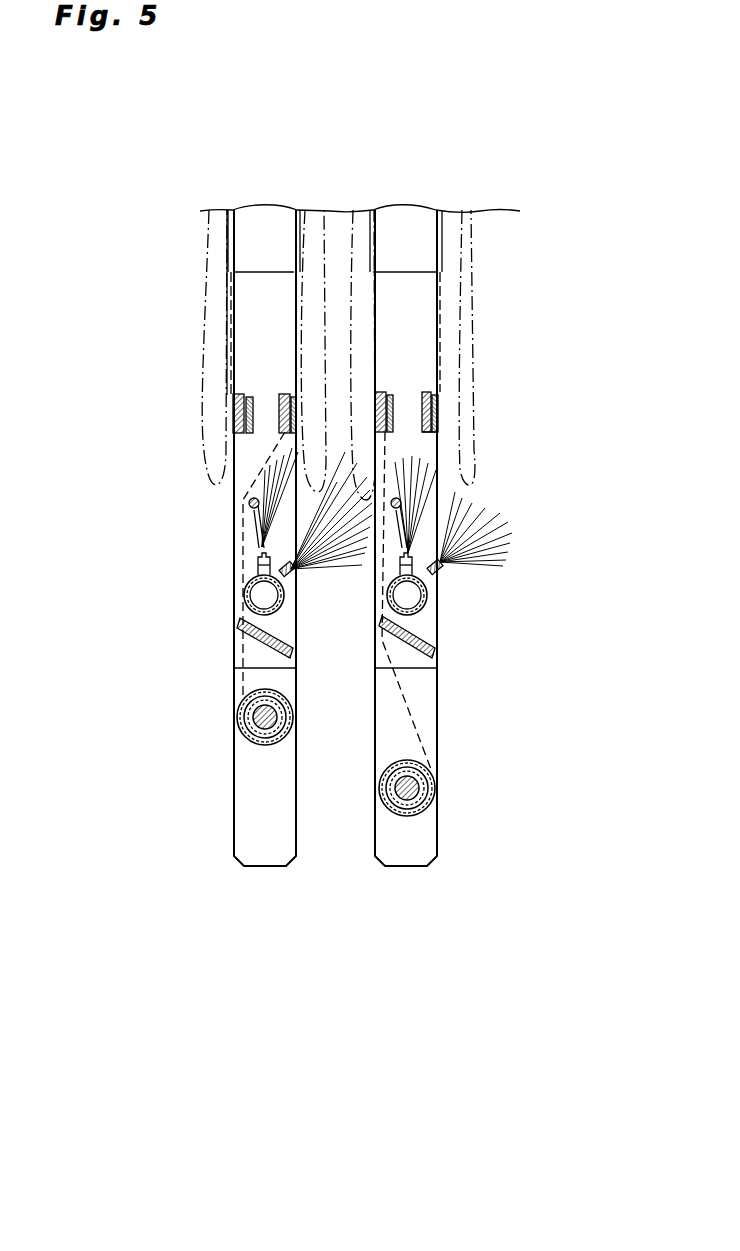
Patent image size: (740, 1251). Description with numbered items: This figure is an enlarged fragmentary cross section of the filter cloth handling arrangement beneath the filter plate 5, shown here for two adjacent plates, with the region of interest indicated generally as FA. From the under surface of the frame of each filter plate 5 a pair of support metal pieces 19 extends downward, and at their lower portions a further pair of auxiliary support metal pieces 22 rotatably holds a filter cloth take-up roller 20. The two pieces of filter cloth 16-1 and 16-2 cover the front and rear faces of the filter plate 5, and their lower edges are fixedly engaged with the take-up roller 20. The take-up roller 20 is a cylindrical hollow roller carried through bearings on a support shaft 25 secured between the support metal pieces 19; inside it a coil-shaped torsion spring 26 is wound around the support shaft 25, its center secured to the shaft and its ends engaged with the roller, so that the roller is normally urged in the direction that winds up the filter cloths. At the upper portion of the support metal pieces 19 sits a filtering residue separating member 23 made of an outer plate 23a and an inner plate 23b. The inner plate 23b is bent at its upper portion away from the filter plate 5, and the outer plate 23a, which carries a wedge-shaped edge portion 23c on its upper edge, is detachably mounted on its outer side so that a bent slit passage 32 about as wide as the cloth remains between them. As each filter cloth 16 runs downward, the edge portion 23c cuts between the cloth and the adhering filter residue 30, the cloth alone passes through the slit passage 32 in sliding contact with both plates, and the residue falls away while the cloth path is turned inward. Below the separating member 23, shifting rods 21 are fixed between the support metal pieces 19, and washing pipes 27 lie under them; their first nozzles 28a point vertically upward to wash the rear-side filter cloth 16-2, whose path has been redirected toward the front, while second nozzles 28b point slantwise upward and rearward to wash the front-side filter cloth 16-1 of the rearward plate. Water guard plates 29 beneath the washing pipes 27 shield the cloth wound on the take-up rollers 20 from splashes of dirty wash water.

The filter plate 5 is at (232, 296).
The filter cloth 16 is at (442, 335).
The filter cloth 16-1 is at (228, 258).
The filter cloth 16-2 is at (300, 270).
The support metal piece 19 is at (247, 655).
The filter cloth take-up roller 20 is at (233, 717).
The shifting rod 21 is at (249, 503).
The auxiliary support metal piece 22 is at (248, 788).
The filtering residue separating member 23 is at (278, 395).
The outer plate 23a is at (437, 418).
The inner plate 23b is at (437, 400).
The wedge-shaped edge portion 23c is at (233, 402).
The support shaft 25 is at (275, 712).
The torsion spring 26 is at (282, 735).
The washing pipe 27 is at (246, 597).
The first nozzle 28a is at (256, 565).
The second nozzle 28b is at (296, 580).
The water guard plate 29 is at (240, 625).
The filter residue 30 is at (218, 243).
The slit passage 32 is at (440, 428).
The fiber assembly FA is at (570, 172).